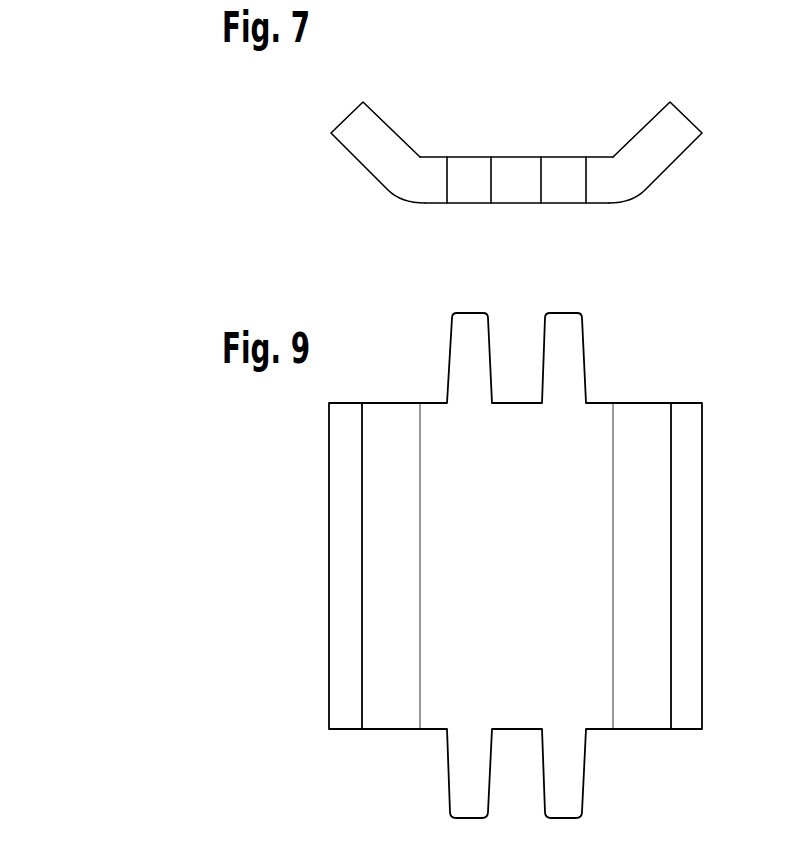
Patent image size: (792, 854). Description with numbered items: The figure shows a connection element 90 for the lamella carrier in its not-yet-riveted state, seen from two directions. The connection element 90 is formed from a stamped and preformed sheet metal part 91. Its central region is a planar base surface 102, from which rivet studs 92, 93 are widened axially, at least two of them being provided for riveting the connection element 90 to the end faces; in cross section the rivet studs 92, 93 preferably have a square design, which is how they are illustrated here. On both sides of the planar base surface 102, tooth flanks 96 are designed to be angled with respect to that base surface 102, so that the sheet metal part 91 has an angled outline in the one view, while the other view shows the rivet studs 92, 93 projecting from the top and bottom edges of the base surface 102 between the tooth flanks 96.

In FIG. 7, the connection element 90 is at (568, 142).
In FIG. 9, the connection element 90 is at (714, 624).
In FIG. 7, the sheet metal part 91 is at (518, 190).
In FIG. 9, the sheet metal part 91 is at (570, 487).
In FIG. 7, the rivet stud 92 is at (465, 190).
In FIG. 9, the rivet stud 92 is at (567, 363).
In FIG. 9, the rivet stud 93 is at (567, 768).
In FIG. 7, the tooth flank 96 is at (376, 159).
In FIG. 9, the tooth flank 96 is at (372, 513).
In FIG. 7, the planar base surface 102 is at (525, 170).
In FIG. 9, the planar base surface 102 is at (460, 585).